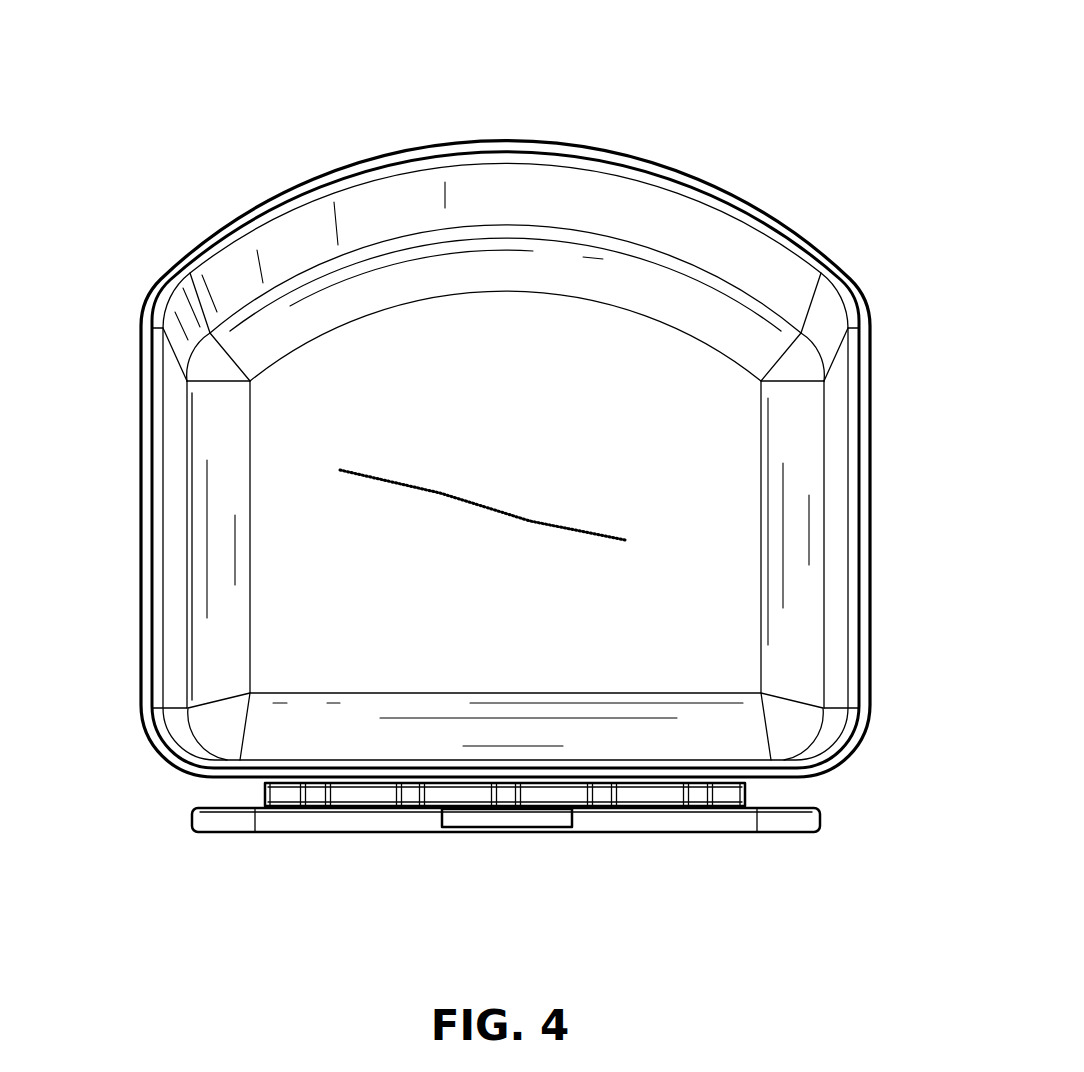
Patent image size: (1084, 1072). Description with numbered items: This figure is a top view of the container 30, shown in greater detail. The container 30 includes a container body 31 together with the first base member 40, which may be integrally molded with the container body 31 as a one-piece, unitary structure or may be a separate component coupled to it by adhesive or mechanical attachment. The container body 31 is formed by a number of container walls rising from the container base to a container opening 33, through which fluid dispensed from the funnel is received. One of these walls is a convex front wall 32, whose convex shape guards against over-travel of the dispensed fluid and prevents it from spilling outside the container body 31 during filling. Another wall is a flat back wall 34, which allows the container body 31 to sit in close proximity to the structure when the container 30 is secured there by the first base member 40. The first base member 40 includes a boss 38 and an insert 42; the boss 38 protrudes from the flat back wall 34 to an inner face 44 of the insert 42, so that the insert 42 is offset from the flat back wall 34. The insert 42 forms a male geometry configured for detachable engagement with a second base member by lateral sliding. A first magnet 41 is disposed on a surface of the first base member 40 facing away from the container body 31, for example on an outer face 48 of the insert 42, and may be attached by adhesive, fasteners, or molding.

The container 30 is at (500, 470).
The container body 31 is at (478, 184).
The convex front wall 32 is at (660, 162).
The container opening 33 is at (278, 497).
The flat back wall 34 is at (748, 786).
The boss 38 is at (265, 800).
The first base member 40 is at (502, 822).
The first magnet 41 is at (510, 828).
The insert 42 is at (187, 818).
The inner face 44 is at (780, 809).
The outer face 48 is at (223, 833).